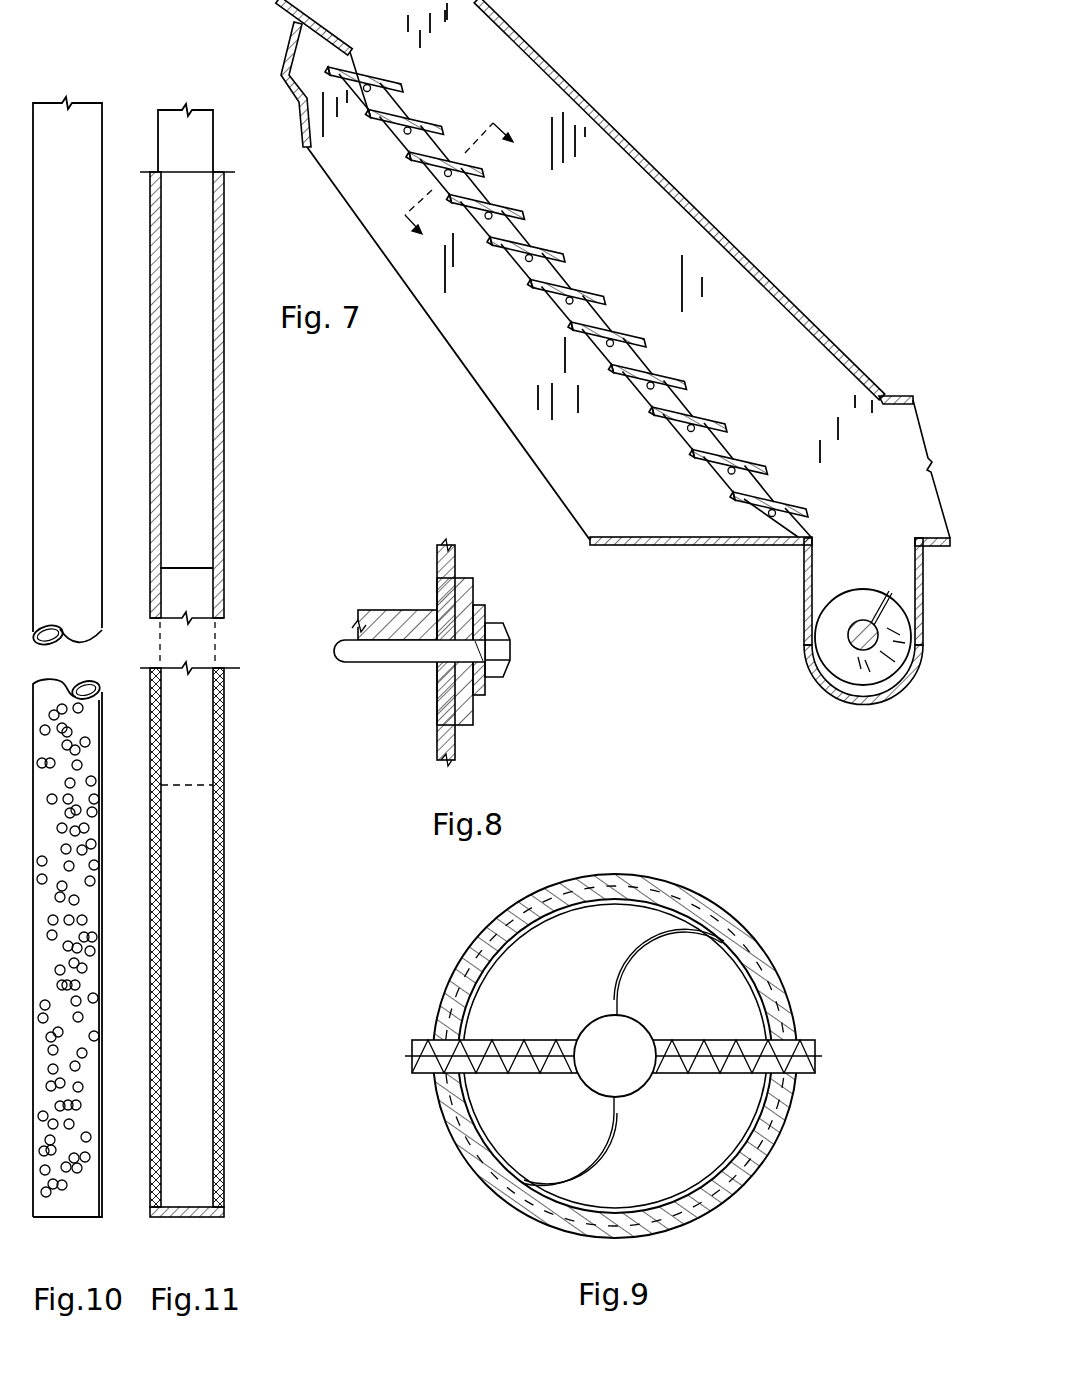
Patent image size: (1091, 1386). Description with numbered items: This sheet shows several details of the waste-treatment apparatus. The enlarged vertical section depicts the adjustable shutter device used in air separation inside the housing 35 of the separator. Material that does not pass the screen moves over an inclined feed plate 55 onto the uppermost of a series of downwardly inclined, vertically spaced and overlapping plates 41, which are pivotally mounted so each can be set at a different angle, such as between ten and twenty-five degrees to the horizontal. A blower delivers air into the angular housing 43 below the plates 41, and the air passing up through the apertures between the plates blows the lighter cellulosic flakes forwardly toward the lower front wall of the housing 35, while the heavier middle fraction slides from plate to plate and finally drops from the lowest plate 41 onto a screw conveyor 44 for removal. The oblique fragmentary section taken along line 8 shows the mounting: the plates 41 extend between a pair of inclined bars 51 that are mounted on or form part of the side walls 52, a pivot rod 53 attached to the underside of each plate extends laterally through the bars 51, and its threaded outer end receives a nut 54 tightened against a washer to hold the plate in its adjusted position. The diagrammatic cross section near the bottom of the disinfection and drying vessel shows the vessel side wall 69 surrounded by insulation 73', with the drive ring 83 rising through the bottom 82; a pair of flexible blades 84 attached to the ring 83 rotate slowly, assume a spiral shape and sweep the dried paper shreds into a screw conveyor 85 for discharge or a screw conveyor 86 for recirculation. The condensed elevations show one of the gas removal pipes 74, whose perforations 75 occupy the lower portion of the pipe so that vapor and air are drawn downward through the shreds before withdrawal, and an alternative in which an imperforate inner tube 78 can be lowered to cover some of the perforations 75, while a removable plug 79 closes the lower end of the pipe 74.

In FIG. 7, the housing 35 is at (702, 214).
In FIG. 7, the plates 41 is at (380, 79).
In FIG. 8, the plates 41 is at (406, 610).
In FIG. 7, the angular housing 43 is at (743, 547).
In FIG. 7, the screw conveyor 44 is at (880, 590).
In FIG. 7, the inclined bars 51 is at (408, 114).
In FIG. 8, the inclined bars 51 is at (473, 718).
In FIG. 7, the side walls 52 is at (608, 235).
In FIG. 8, the side walls 52 is at (456, 572).
In FIG. 7, the pivot rod 53 is at (403, 131).
In FIG. 8, the pivot rod 53 is at (402, 662).
In FIG. 8, the nut 54 is at (510, 628).
In FIG. 7, the inclined feed plate 55 is at (322, 32).
In FIG. 7, the section line 8— 8 is at (447, 162).
In FIG. 9, the side wall 69 is at (513, 940).
In FIG. 9, the insulation 73' is at (615, 1056).
In FIG. 9, the bottom 82 is at (538, 1000).
In FIG. 9, the drive ring 83 is at (652, 1035).
In FIG. 9, the flexible blades 84 is at (646, 946).
In FIG. 9, the screw conveyor 85 is at (721, 1076).
In FIG. 9, the screw conveyor 86 is at (546, 1075).
In FIG. 10, the pipes 74 is at (103, 170).
In FIG. 11, the pipes 74 is at (225, 470).
In FIG. 10, the perforations 75 is at (40, 732).
In FIG. 11, the perforations 75 is at (152, 800).
In FIG. 11, the imperforate inner tube 78 is at (216, 171).
In FIG. 11, the plug 79 is at (205, 1223).